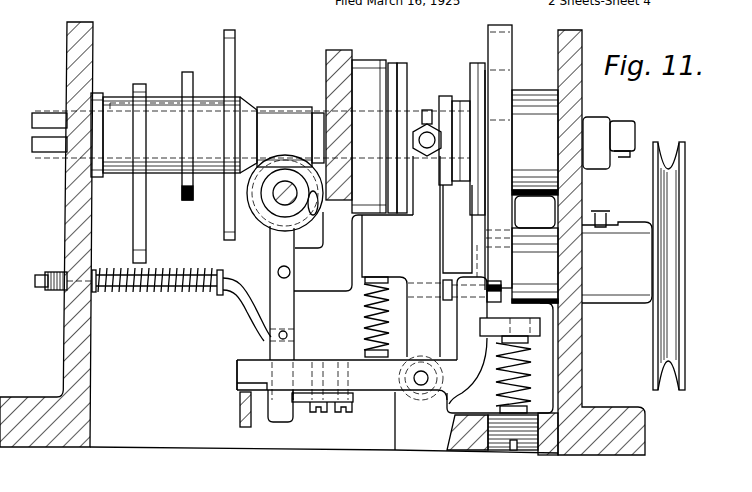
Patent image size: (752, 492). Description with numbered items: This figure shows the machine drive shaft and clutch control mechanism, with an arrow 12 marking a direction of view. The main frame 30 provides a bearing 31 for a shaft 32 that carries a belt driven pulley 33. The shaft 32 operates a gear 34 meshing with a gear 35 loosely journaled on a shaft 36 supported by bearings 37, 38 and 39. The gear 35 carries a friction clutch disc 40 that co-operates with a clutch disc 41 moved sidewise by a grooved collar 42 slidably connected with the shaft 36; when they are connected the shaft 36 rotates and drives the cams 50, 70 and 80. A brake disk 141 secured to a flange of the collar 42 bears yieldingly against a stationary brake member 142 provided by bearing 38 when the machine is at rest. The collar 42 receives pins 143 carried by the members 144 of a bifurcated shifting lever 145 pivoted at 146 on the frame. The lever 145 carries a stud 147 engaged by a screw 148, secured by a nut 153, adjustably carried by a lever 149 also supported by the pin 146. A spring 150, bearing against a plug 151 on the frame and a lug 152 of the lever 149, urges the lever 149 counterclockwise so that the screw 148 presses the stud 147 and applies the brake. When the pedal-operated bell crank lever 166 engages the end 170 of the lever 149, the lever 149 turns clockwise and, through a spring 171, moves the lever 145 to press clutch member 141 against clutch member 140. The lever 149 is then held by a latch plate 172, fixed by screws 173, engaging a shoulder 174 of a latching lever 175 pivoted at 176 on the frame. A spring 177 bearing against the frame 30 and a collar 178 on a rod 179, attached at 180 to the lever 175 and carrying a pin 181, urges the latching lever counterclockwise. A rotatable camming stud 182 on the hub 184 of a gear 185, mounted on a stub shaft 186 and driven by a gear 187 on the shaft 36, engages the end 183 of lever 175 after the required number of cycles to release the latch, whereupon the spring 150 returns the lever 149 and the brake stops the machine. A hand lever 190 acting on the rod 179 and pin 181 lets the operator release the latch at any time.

The lever mechanism 12 is at (183, 388).
The main frame 30 is at (66, 206).
The bearing 31 is at (530, 238).
The shaft 32 is at (480, 250).
The belt driven pulley 33 is at (676, 183).
The gear 34 is at (492, 262).
The gear 35 is at (505, 25).
The shaft 36 is at (45, 113).
The bearing 37 is at (538, 92).
The bearing 38 is at (326, 55).
The bearing 39 is at (99, 93).
The friction clutch disc 40 is at (478, 63).
The clutch disc 41 is at (461, 101).
The grooved collar 42 is at (442, 96).
The cam 50 is at (188, 72).
The cam 70 is at (231, 30).
The cam 80 is at (139, 84).
The clutch member 140 is at (403, 62).
The brake disk 141 is at (395, 62).
The brake member 142 is at (387, 62).
The pins 143 is at (427, 132).
The members 144 is at (432, 186).
The bifurcated shifting lever 145 is at (401, 248).
The pivot pin 146 is at (416, 384).
The stud 147 is at (442, 298).
The screw 148 is at (453, 299).
The lever 149 is at (472, 370).
The spring 150 is at (524, 385).
The plug 151 is at (530, 453).
The lug 152 is at (510, 324).
The nut 153 is at (489, 304).
The bell crank lever 166 is at (240, 412).
The end of lever 170 is at (240, 386).
The spring 171 is at (363, 305).
The latch plate 172 is at (303, 402).
The screws 173 is at (339, 412).
The shoulder 174 is at (294, 397).
The latching lever 175 is at (270, 405).
The pivot 176 is at (279, 271).
The spring 177 is at (160, 294).
The collar 178 is at (220, 295).
The rod 179 is at (247, 318).
The attachment point 180 is at (287, 334).
The pin 181 is at (43, 291).
The camming stud 182 is at (262, 218).
The end of lever 183 is at (313, 219).
The hub 184 is at (266, 186).
The gear 185 is at (320, 112).
The stub shaft 186 is at (287, 182).
The gear 187 is at (275, 107).
The hand lever 190 is at (62, 272).